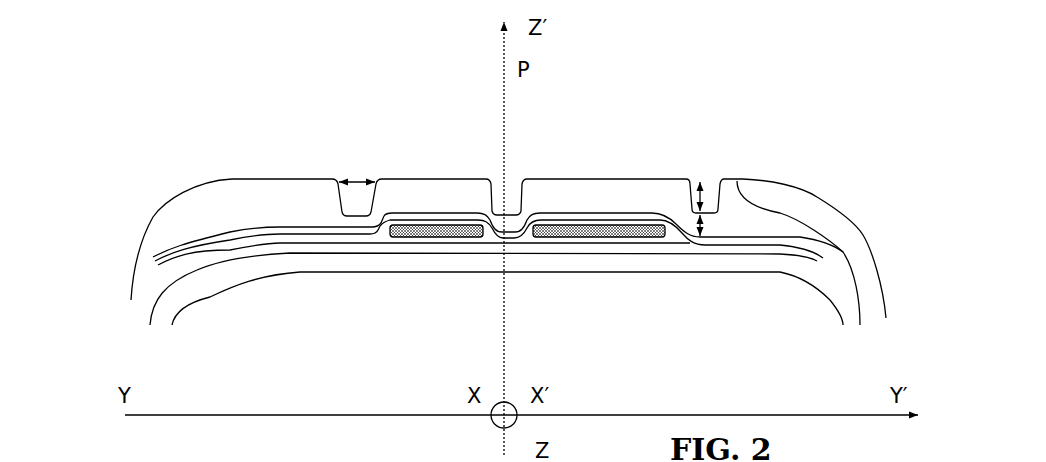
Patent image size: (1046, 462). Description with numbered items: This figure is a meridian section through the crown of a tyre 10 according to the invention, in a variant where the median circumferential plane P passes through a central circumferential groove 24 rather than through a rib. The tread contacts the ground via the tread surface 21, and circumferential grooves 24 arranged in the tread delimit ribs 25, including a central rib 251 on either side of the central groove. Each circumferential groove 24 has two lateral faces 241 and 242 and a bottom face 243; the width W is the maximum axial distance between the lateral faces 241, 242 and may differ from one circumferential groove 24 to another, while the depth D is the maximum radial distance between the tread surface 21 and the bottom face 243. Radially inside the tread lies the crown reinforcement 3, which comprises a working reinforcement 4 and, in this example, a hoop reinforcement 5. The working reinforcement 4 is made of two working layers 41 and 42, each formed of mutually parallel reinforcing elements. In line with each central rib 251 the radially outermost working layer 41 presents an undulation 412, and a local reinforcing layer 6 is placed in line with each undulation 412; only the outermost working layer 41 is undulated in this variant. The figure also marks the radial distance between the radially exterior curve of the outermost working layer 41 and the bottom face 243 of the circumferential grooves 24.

The crown reinforcement 3 is at (42, 210).
The working reinforcement 4 is at (83, 248).
The hoop reinforcement 5 is at (194, 240).
The local reinforcing layer 6 is at (580, 233).
The tyre 10 is at (711, 105).
The tread surface 21 is at (778, 179).
The circumferential groove 24 is at (352, 192).
The rib 25 is at (253, 194).
The working layer 41 is at (189, 253).
The working layer 42 is at (188, 265).
The lateral face 241 is at (336, 190).
The lateral face 242 is at (374, 190).
The bottom face 243 is at (348, 219).
The central rib 251 is at (584, 195).
The undulation 412 is at (541, 217).